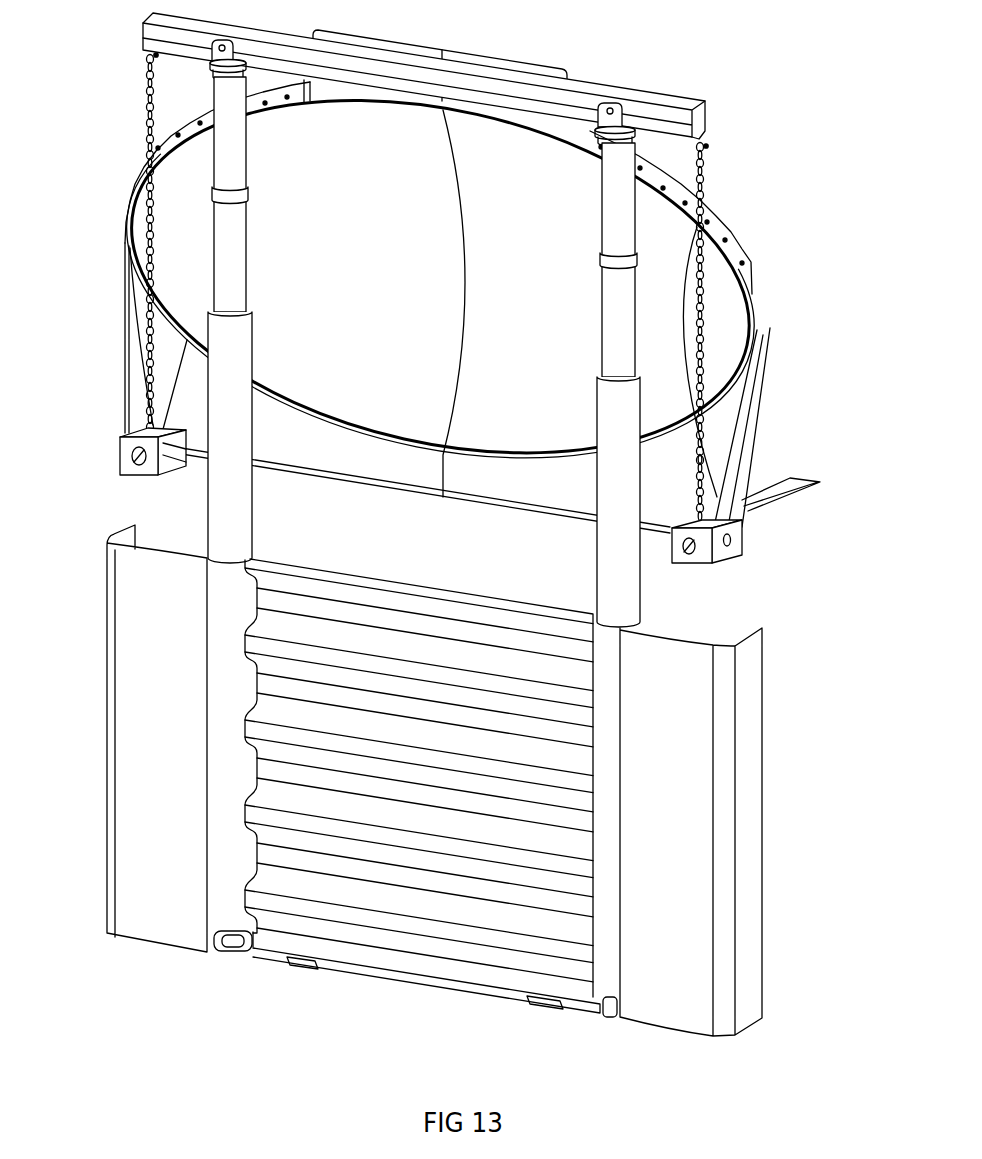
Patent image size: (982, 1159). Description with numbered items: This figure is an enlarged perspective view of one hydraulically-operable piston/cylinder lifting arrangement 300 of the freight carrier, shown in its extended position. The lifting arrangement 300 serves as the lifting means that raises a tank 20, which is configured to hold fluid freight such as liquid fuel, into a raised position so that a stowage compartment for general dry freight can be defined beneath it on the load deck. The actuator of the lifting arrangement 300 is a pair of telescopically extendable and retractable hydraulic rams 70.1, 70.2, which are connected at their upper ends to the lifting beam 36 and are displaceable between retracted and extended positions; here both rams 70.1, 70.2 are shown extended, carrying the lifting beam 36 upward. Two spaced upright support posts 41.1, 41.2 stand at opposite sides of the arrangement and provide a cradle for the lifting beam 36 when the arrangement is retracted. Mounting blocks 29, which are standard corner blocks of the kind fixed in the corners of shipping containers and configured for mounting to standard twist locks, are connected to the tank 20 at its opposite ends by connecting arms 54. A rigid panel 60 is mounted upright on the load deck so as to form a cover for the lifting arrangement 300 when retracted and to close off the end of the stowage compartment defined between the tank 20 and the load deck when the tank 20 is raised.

The hydraulically-operable piston/cylinder lifting arrangement 300 is at (442, 562).
The lifting beam 36 is at (533, 83).
The tank 20 is at (725, 322).
The hydraulic ram 70.1 is at (243, 262).
The hydraulic ram 70.2 is at (604, 323).
The connecting arm 54 is at (127, 398).
The mounting block 29 is at (122, 460).
The rigid panel 60 is at (413, 922).
The upright support post 41.1 is at (170, 915).
The upright support post 41.2 is at (703, 963).